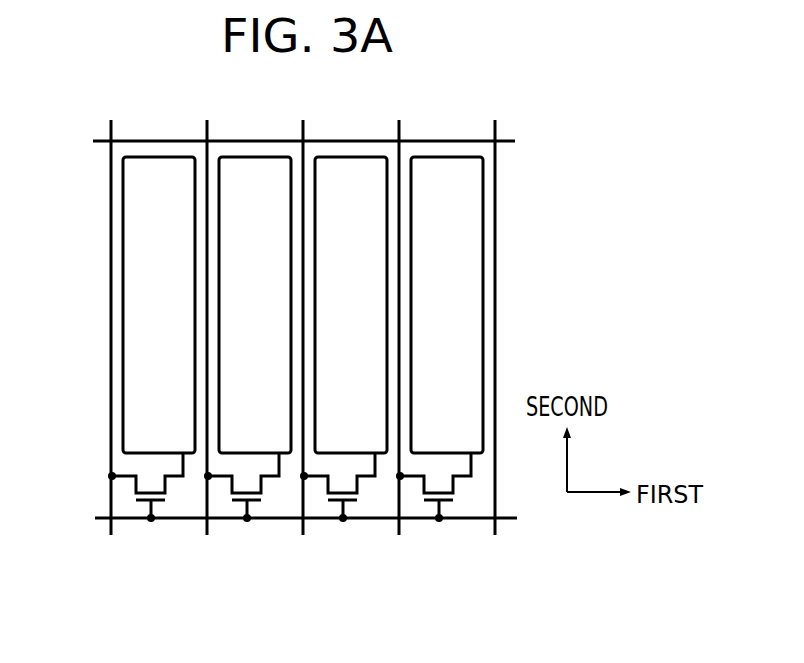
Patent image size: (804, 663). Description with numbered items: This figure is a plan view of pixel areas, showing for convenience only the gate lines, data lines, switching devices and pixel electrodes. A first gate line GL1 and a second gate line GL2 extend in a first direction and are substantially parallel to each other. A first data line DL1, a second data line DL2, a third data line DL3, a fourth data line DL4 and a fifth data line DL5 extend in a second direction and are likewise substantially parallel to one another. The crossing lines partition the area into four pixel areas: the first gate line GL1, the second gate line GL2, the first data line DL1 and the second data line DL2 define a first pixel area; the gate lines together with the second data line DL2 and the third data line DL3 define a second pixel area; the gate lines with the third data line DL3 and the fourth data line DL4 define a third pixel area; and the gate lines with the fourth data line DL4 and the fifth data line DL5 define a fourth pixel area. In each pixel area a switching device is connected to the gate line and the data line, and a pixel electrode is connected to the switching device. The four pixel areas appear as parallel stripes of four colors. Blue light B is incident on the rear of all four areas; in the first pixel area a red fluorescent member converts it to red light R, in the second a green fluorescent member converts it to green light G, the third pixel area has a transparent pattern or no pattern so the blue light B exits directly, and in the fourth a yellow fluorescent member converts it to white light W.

The first gate line GL1 is at (93, 141).
The second gate line GL2 is at (95, 518).
The first data line DL1 is at (115, 535).
The second data line DL2 is at (211, 535).
The third data line DL3 is at (307, 535).
The fourth data line DL4 is at (403, 535).
The fifth data line DL5 is at (499, 535).
The red light R is at (151, 339).
The green light G is at (247, 339).
The blue light B is at (343, 339).
The white light W is at (439, 339).